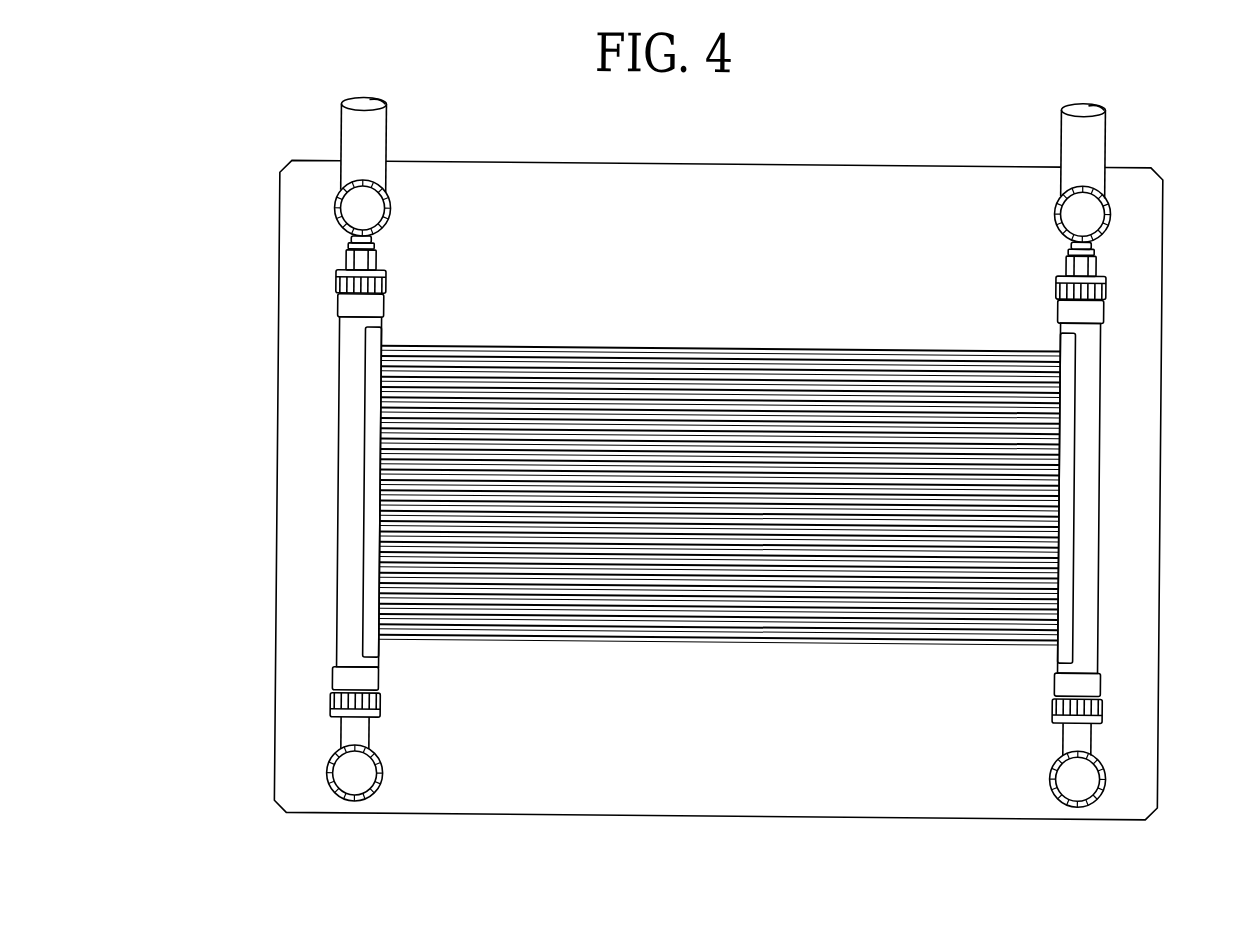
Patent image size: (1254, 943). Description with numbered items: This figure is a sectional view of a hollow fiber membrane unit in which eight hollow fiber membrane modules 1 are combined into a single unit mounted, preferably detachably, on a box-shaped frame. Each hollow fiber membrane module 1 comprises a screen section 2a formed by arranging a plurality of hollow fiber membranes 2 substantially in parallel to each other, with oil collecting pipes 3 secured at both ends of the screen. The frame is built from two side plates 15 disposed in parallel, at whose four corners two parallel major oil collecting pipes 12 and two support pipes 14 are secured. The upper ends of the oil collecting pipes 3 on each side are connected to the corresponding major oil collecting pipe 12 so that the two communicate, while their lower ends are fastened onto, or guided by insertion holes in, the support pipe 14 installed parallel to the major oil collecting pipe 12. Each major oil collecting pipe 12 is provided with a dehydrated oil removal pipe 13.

The hollow fiber membrane module 1 is at (695, 595).
The hollow fiber membranes 2 is at (640, 609).
The screen section 2a is at (837, 616).
The oil collecting pipes 3 is at (342, 471).
The major oil collecting pipes 12 is at (334, 204).
The dehydrated oil removal pipe 13 is at (381, 114).
The support pipes 14 is at (360, 801).
The side plates 15 is at (654, 183).